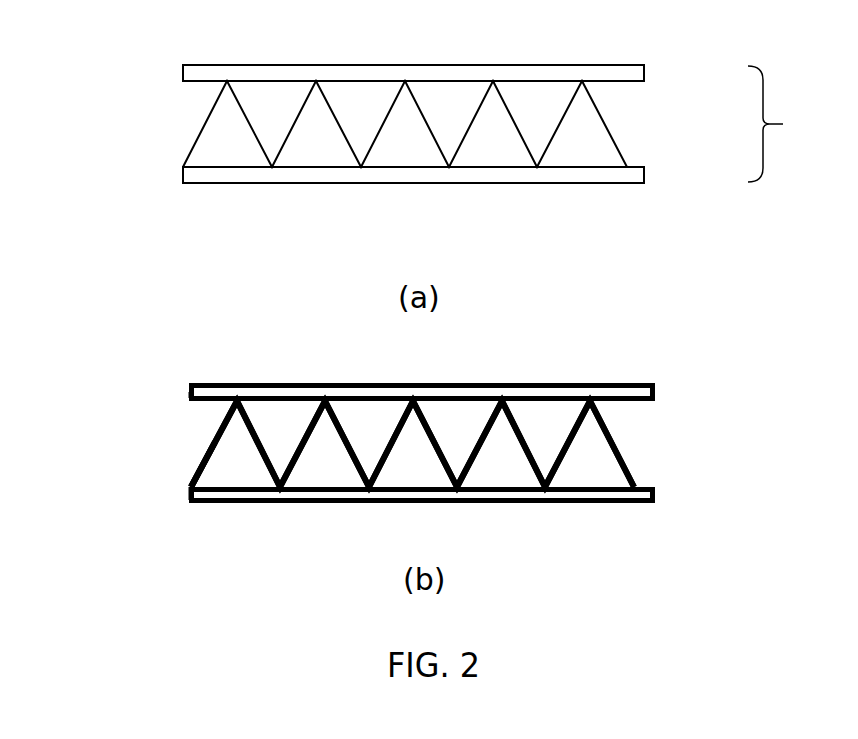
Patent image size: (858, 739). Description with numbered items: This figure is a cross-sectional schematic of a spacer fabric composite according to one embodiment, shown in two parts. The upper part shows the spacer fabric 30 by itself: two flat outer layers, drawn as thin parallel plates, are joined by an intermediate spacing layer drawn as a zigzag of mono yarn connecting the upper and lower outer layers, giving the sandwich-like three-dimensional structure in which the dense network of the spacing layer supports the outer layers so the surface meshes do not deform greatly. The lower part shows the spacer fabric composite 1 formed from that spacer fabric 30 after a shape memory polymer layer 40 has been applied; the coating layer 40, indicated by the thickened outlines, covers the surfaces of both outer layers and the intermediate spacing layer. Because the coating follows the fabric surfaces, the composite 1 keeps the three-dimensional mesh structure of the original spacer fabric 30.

The spacer fabric composite 1 is at (281, 378).
The spacer fabric 30 is at (791, 124).
The shape memory polymer layer 40 is at (206, 456).